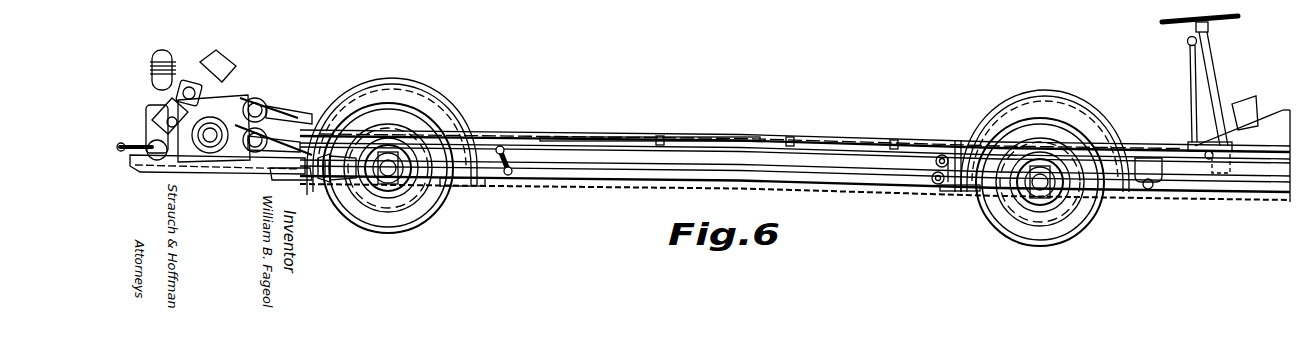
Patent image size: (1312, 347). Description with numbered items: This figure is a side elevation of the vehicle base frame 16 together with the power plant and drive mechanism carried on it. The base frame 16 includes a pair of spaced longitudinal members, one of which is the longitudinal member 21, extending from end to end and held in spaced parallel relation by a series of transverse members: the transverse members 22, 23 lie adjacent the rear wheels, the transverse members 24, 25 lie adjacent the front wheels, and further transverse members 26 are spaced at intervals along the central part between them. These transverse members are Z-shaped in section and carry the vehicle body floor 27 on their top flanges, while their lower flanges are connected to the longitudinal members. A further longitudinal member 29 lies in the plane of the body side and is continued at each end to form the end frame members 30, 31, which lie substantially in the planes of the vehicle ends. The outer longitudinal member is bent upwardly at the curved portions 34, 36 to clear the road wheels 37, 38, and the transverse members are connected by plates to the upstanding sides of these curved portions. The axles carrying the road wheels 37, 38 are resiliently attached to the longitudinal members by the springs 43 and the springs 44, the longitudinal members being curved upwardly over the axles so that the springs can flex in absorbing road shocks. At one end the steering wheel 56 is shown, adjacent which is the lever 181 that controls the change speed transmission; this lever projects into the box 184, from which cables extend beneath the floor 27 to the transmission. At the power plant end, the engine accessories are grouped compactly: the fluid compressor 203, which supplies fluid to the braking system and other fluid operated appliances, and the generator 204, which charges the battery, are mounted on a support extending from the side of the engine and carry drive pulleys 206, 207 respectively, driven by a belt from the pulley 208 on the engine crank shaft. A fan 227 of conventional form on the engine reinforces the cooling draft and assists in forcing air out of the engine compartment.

The base frame 16 is at (611, 149).
The longitudinal member 21 is at (572, 156).
The transverse member 22 is at (315, 154).
The transverse member 23 is at (479, 133).
The transverse member 24 is at (954, 183).
The transverse member 25 is at (1120, 153).
The transverse members 26 is at (661, 138).
The vehicle body floor 27 is at (742, 140).
The longitudinal member 29 is at (612, 181).
The end frame member 30 is at (1282, 194).
The end frame member 31 is at (140, 166).
The curved portion 34 is at (418, 88).
The curved portion 36 is at (1048, 93).
The road wheel 37 is at (410, 213).
The road wheel 38 is at (1030, 232).
The springs 43 is at (967, 192).
The springs 44 is at (457, 184).
The steering wheel 56 is at (1182, 20).
The lever 181 is at (1192, 80).
The box 184 is at (1192, 157).
The fluid compressor 203 is at (258, 100).
The generator 204 is at (270, 138).
The drive pulley 206 is at (264, 112).
The drive pulley 207 is at (258, 143).
The pulley 208 is at (167, 121).
The fan 227 is at (191, 86).